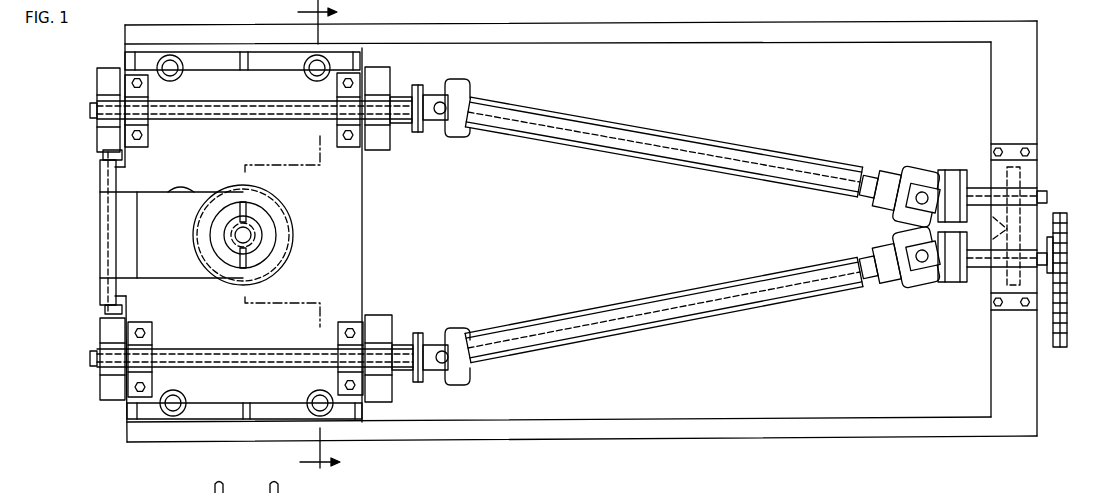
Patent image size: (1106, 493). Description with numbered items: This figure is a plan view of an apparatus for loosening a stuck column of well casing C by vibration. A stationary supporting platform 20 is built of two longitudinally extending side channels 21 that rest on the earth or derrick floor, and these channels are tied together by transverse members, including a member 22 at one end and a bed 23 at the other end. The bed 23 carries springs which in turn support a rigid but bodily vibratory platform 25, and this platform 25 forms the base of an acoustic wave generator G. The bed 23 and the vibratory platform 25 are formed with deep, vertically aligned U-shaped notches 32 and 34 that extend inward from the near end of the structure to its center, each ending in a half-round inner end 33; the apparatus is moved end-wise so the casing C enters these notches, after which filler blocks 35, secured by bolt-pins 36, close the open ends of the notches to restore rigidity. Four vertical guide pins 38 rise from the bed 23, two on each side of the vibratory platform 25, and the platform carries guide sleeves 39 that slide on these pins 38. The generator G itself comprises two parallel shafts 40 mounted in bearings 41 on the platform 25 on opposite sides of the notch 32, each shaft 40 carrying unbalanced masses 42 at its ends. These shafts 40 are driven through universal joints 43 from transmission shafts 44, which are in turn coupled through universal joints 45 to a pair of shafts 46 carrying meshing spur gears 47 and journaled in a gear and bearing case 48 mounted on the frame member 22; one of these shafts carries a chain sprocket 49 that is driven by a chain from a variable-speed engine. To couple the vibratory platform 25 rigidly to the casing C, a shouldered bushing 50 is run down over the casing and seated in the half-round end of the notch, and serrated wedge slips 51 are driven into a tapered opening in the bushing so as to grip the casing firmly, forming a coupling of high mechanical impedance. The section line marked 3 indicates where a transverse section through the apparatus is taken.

The supporting platform 20 is at (646, 441).
The side channels 21 is at (718, 22).
The transverse member 22 is at (993, 90).
The bed 23 is at (124, 407).
The vibratory platform 25 is at (363, 193).
The notch 32 is at (146, 192).
The half-round inner end 33 is at (284, 217).
The notch 34 is at (183, 194).
The filler blocks 35 is at (101, 200).
The bolt-pins 36 is at (101, 245).
The guide pins 38 is at (312, 401).
The guide sleeves 39 is at (175, 418).
The shafts 40 is at (205, 116).
The bearings 41 is at (149, 122).
The unbalanced masses 42 is at (97, 73).
The universal joints 43 is at (452, 137).
The transmission shafts 44 is at (682, 141).
The universal joints 45 is at (908, 166).
The shafts 46 is at (978, 188).
The spur gears 47 is at (993, 228).
The gear and bearing case 48 is at (1035, 165).
The chain sprocket 49 is at (1062, 224).
The shouldered bushing 50 is at (277, 205).
The serrated wedge slips 51 is at (250, 262).
The well casing C is at (252, 243).
The acoustic wave generator G is at (378, 62).
The section line 3 is at (292, 246).